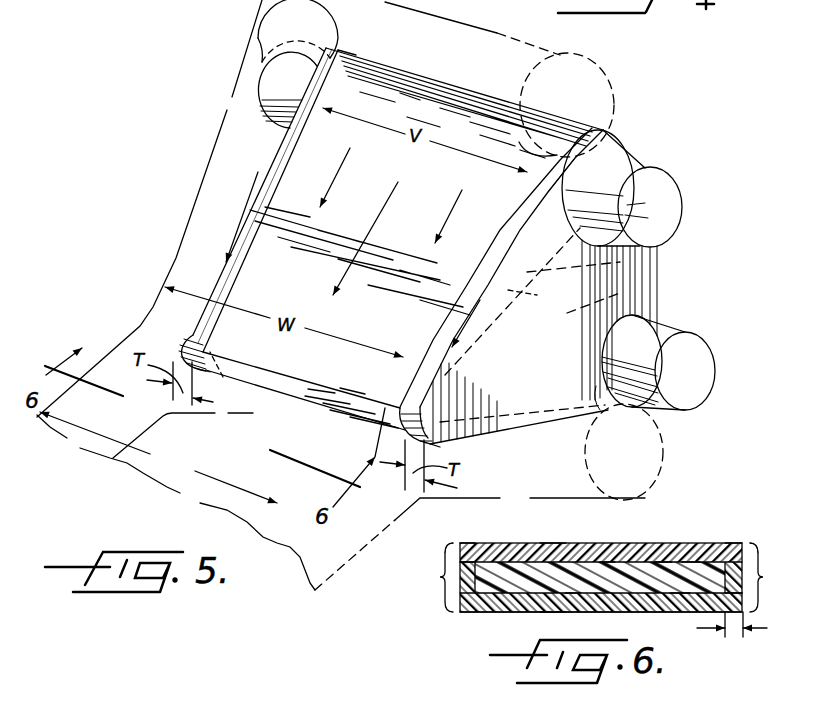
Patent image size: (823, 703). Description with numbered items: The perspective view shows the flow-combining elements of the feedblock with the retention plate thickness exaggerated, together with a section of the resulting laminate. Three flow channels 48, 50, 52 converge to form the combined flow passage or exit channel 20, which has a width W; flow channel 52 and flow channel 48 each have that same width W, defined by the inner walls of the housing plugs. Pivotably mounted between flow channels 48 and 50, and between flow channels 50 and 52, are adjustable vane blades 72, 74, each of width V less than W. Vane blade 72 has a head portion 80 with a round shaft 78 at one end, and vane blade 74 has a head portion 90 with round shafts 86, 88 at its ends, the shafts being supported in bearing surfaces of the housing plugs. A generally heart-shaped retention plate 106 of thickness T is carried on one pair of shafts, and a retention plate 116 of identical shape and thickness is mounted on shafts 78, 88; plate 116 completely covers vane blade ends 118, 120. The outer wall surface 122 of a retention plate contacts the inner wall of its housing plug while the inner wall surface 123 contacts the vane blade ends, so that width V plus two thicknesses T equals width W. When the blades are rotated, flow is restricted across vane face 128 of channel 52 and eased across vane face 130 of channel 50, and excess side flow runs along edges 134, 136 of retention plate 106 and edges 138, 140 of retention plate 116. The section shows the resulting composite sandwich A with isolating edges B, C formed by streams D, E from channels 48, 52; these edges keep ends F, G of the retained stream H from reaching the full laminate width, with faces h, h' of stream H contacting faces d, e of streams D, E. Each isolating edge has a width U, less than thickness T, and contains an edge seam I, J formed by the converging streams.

In FIG. 5, the exit channel 20 is at (282, 512).
In FIG. 5, the flow channel 48 is at (567, 462).
In FIG. 5, the flow channel 50 is at (522, 313).
In FIG. 5, the flow channel 52 is at (565, 57).
In FIG. 5, the vane blade 72 is at (357, 420).
In FIG. 5, the vane blade 74 is at (428, 97).
In FIG. 5, the round shaft 78 is at (690, 342).
In FIG. 5, the head portion 80 is at (603, 420).
In FIG. 5, the round shaft 86 is at (267, 88).
In FIG. 5, the round shaft 88 is at (663, 180).
In FIG. 5, the head portion 90 is at (521, 140).
In FIG. 5, the retention plate 106 is at (353, 52).
In FIG. 5, the retention plate 116 is at (602, 128).
In FIG. 5, the vane blade end 118 is at (537, 410).
In FIG. 5, the vane blade end 120 is at (543, 301).
In FIG. 5, the outer wall surface 122 is at (638, 270).
In FIG. 5, the inner wall surface 123 is at (198, 353).
In FIG. 5, the vane face 128 is at (524, 140).
In FIG. 5, the vane face 130 is at (327, 398).
In FIG. 5, the edge 134 is at (223, 377).
In FIG. 5, the edge 136 is at (270, 157).
In FIG. 5, the edge 138 is at (497, 440).
In FIG. 5, the edge 140 is at (477, 290).
In FIG. 6, the composite sandwich A is at (485, 615).
In FIG. 6, the isolating edge B is at (764, 570).
In FIG. 6, the isolating edge C is at (432, 569).
In FIG. 6, the stream D is at (555, 605).
In FIG. 6, the stream E is at (553, 543).
In FIG. 6, the end F is at (475, 583).
In FIG. 6, the end G is at (737, 590).
In FIG. 6, the retained stream H is at (608, 560).
In FIG. 6, the edge seam I is at (737, 545).
In FIG. 6, the edge seam J is at (475, 543).
In FIG. 6, the width U is at (733, 630).
In FIG. 6, the face d is at (688, 597).
In FIG. 6, the face e is at (690, 567).
In FIG. 6, the face h is at (656, 537).
In FIG. 6, the face h' is at (581, 603).